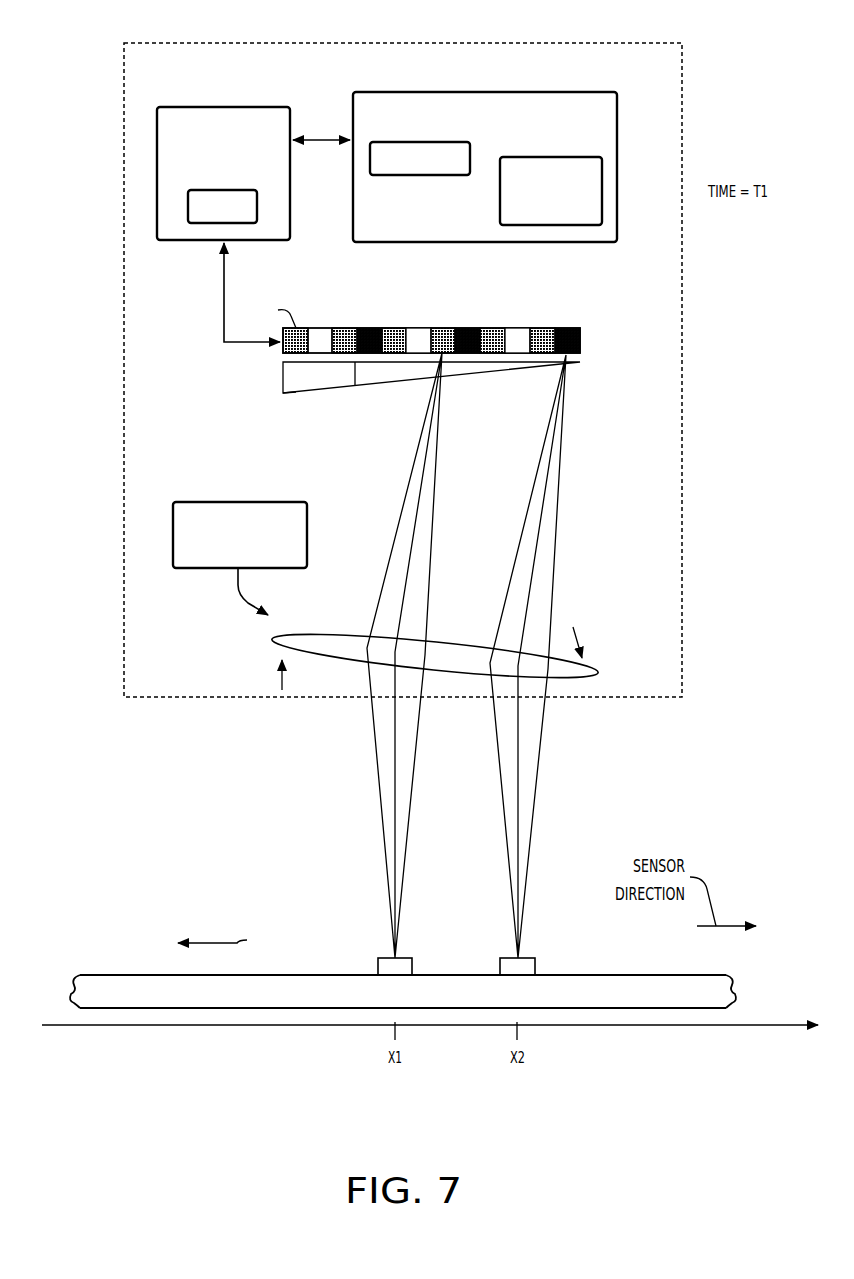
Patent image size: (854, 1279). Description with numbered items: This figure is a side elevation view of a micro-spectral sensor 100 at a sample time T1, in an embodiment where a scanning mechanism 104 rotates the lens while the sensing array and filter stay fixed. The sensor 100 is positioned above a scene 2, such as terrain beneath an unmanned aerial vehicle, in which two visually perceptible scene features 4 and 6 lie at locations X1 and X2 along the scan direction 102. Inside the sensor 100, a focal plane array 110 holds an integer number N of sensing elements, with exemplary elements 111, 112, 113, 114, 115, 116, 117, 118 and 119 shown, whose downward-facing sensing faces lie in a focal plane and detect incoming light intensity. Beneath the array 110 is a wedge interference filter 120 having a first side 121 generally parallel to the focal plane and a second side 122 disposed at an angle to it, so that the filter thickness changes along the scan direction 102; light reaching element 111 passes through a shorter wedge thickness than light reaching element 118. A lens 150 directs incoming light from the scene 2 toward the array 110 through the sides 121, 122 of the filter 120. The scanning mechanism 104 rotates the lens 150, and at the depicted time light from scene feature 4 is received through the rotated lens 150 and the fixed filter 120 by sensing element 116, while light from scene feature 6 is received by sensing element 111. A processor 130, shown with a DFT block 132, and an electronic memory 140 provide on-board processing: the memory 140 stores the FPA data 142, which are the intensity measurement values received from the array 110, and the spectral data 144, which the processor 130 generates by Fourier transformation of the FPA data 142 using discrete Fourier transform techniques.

The micro-spectral sensor 100 is at (223, 43).
The processor 130 is at (222, 107).
The DFT module 132 is at (222, 190).
The electronic memory 140 is at (486, 92).
The FPA data 142 is at (419, 142).
The spectral data 144 is at (549, 157).
The focal plane array 110 is at (454, 299).
The sensing element 111 is at (568, 328).
The sensing element 112 is at (542, 328).
The sensing element 113 is at (517, 328).
The sensing element 114 is at (492, 328).
The sensing element 115 is at (465, 328).
The sensing element 116 is at (443, 328).
The sensing element 117 is at (418, 328).
The sensing element 118 is at (394, 328).
The sensing element 119 is at (369, 328).
The wedge interference filter 120 is at (407, 399).
The first side 121 is at (355, 388).
The second side 122 is at (304, 393).
The scanning mechanism 104 is at (207, 502).
The lens 150 is at (272, 640).
The scan direction 102 is at (223, 940).
The scene 2 is at (73, 993).
The scene feature 4 is at (383, 959).
The scene feature 6 is at (506, 959).